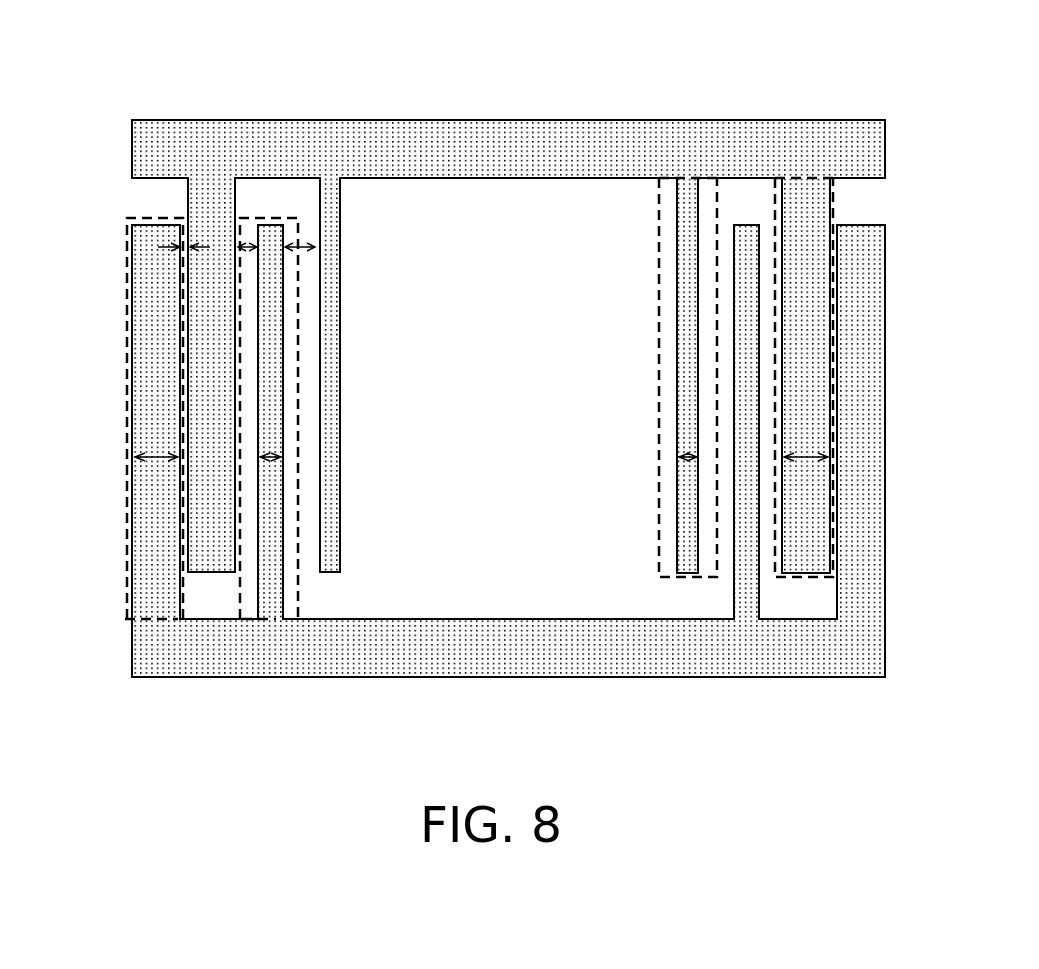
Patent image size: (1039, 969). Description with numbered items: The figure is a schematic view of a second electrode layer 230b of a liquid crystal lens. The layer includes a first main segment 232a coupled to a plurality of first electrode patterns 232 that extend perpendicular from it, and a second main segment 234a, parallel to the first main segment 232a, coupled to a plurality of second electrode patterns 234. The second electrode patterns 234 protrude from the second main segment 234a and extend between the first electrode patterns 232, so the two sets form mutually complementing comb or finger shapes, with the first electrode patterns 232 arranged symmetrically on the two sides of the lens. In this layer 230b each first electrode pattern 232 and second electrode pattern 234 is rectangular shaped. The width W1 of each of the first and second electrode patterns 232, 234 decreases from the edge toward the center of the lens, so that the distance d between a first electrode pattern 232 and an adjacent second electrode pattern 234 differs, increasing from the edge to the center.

The second electrode layer 230b is at (508, 408).
The first electrode patterns 232 is at (180, 598).
The first main segment 232a is at (515, 648).
The second electrode patterns 234 is at (792, 197).
The second main segment 234a is at (583, 130).
The width W1 is at (270, 453).
The distance d is at (300, 243).